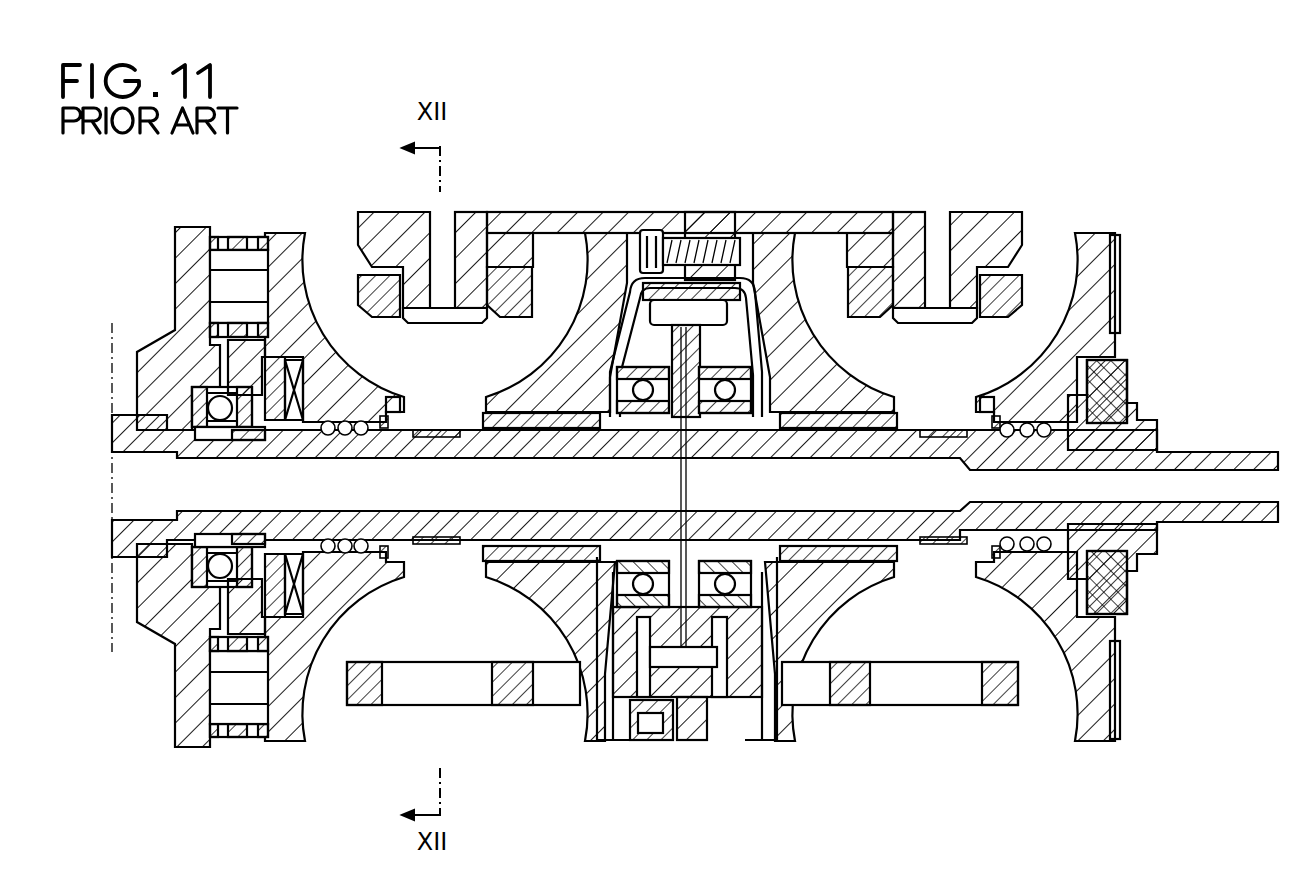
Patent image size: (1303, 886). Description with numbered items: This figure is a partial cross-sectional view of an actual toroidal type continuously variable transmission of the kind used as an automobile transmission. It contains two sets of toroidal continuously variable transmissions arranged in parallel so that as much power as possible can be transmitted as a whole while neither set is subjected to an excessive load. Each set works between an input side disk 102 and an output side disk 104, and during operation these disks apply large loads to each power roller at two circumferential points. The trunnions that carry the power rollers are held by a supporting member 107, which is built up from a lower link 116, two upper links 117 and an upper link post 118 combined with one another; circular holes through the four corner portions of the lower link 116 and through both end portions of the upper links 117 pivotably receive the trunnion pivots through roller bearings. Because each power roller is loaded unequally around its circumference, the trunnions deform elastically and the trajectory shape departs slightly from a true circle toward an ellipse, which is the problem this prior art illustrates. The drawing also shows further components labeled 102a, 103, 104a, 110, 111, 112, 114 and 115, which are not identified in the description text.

The input side disk 102 is at (290, 242).
The rotor inner surface 102a is at (330, 333).
The shaft 103 is at (1190, 450).
The output side disk 104 is at (605, 247).
The rotor inner surface 104a is at (513, 390).
The supporting member 107 is at (865, 210).
The end cap 110 is at (243, 749).
The end plate 111 is at (191, 240).
The coil holder 112 is at (238, 240).
The coil 114 is at (213, 289).
The coil 115 is at (247, 657).
The lower link 116 is at (850, 708).
The upper link 117 is at (382, 307).
The upper link post 118 is at (980, 210).